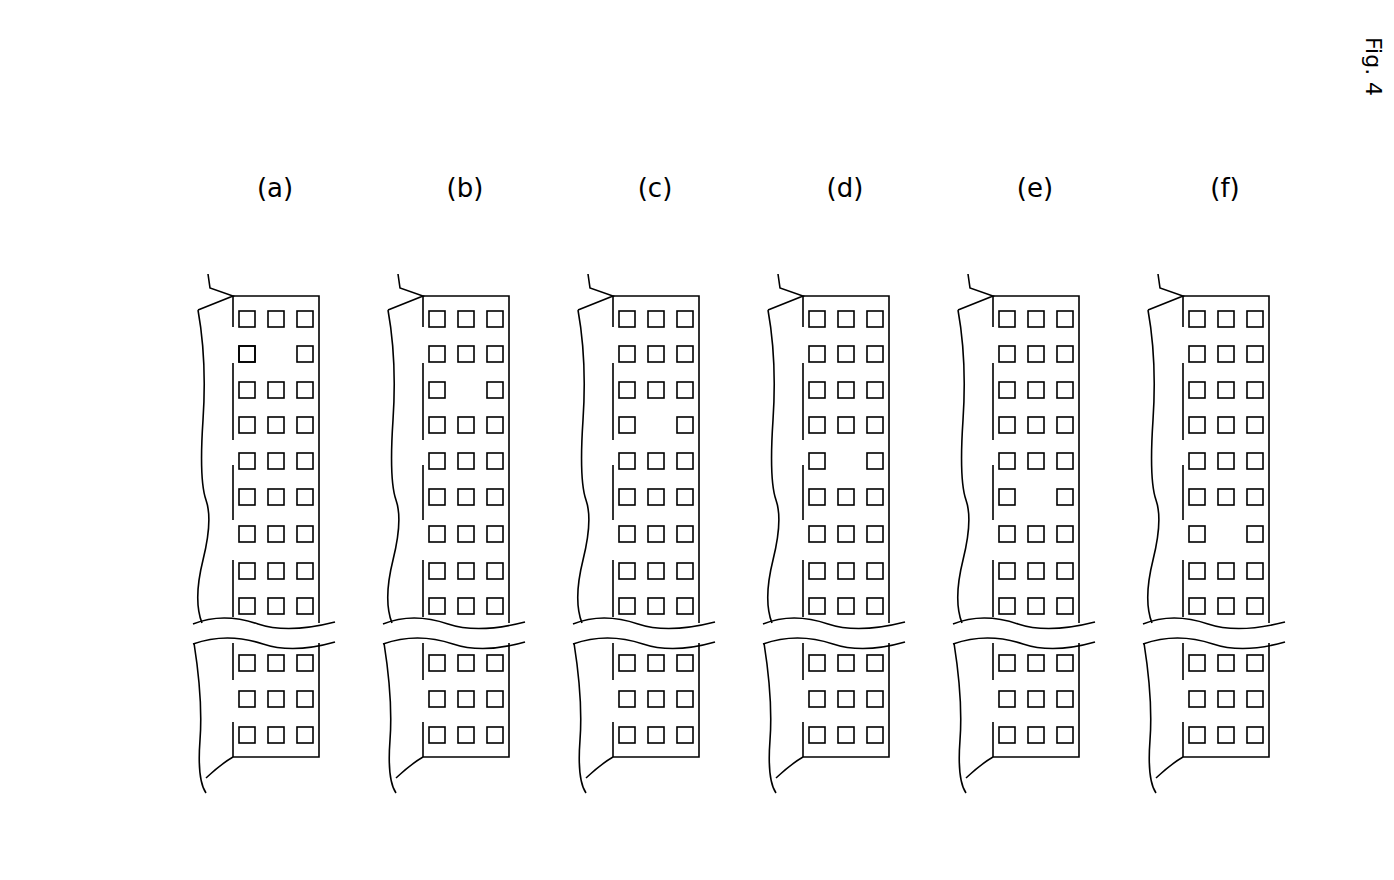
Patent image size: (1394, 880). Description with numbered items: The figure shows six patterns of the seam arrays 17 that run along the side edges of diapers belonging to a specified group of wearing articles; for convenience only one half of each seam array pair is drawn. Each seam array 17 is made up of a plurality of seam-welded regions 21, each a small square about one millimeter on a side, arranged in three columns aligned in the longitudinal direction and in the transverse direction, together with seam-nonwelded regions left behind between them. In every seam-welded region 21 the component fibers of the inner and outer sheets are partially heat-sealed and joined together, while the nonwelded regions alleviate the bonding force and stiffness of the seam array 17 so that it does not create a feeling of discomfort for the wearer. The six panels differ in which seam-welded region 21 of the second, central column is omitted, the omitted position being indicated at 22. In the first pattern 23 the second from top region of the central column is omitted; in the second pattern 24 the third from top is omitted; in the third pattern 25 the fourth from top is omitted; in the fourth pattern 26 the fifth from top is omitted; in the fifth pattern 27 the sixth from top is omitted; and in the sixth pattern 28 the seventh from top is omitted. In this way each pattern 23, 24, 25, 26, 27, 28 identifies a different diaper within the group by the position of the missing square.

The seam array 17 is at (227, 262).
The seam-welded region 21 is at (240, 352).
The vacant position 22 is at (275, 353).
The first pattern 23 is at (258, 513).
The second pattern 24 is at (517, 395).
The third pattern 25 is at (707, 395).
The fourth pattern 26 is at (897, 395).
The fifth pattern 27 is at (1087, 395).
The sixth pattern 28 is at (1277, 395).